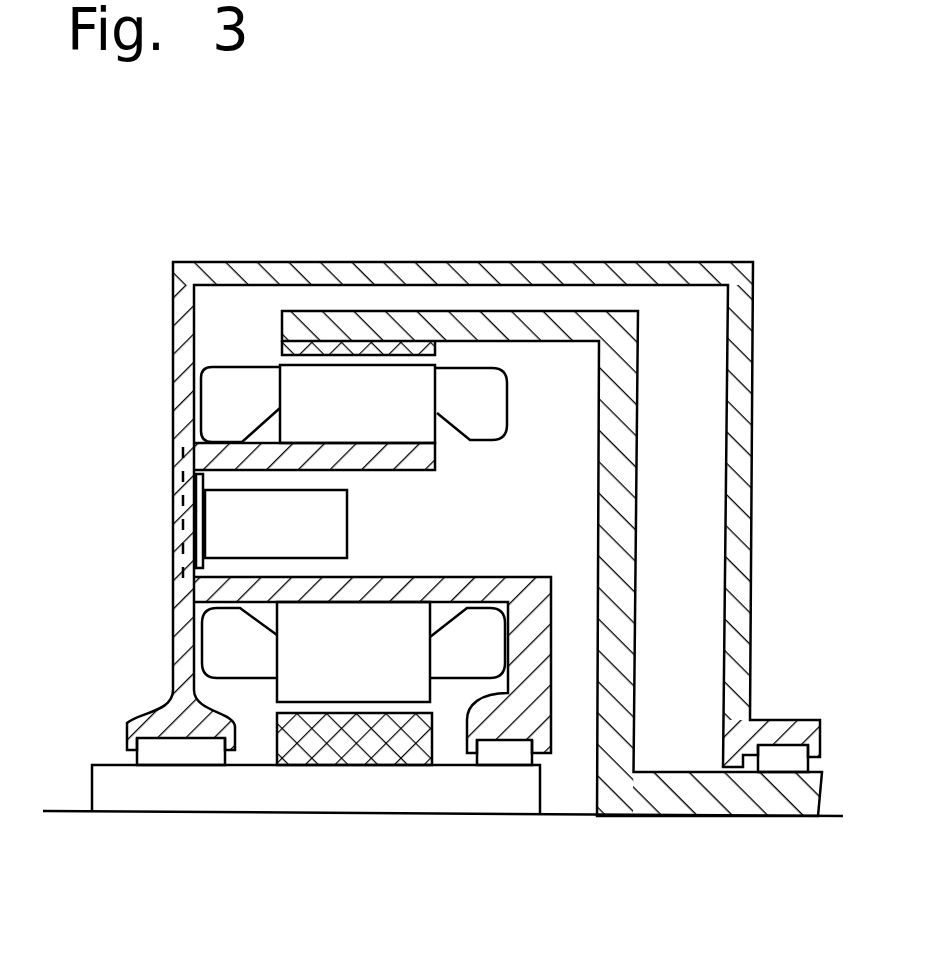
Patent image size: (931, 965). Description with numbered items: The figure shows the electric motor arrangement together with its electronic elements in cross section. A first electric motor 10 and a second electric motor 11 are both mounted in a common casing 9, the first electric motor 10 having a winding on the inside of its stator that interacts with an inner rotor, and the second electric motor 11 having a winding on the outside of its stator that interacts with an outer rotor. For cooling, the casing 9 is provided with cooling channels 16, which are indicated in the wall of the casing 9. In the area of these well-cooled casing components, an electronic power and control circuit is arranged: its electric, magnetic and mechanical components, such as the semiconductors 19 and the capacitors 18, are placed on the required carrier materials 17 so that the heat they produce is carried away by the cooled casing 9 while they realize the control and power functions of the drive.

The casing 9 is at (416, 439).
The first electric motor 10 is at (470, 360).
The second electric motor 11 is at (448, 712).
The cooling channels 16 is at (172, 525).
The carrier materials 17 is at (170, 562).
The capacitors 18 is at (275, 520).
The semiconductors 19 is at (170, 593).